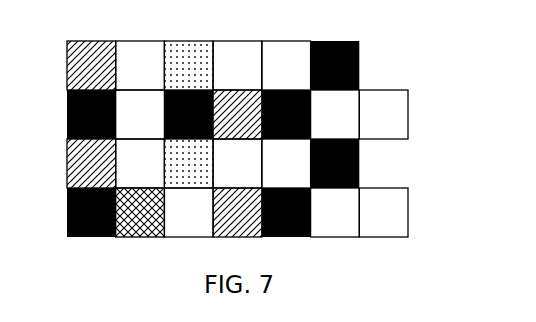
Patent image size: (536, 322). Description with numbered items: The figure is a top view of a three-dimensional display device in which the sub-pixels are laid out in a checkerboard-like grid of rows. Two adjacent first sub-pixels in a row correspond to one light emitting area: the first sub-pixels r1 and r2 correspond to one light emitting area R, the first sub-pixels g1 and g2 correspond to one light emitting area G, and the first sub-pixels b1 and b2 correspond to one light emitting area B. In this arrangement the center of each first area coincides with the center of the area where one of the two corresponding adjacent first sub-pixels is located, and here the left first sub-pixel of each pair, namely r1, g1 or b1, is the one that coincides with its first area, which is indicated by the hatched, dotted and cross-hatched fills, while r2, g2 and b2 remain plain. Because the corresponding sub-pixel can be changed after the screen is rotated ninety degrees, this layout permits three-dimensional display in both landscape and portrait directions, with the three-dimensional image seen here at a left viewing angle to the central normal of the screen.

The first sub-pixel r1 is at (164, 139).
The first sub-pixel r2 is at (140, 114).
The first sub-pixel g1 is at (261, 139).
The first sub-pixel g2 is at (310, 139).
The first sub-pixel b1 is at (213, 139).
The first sub-pixel b2 is at (188, 212).